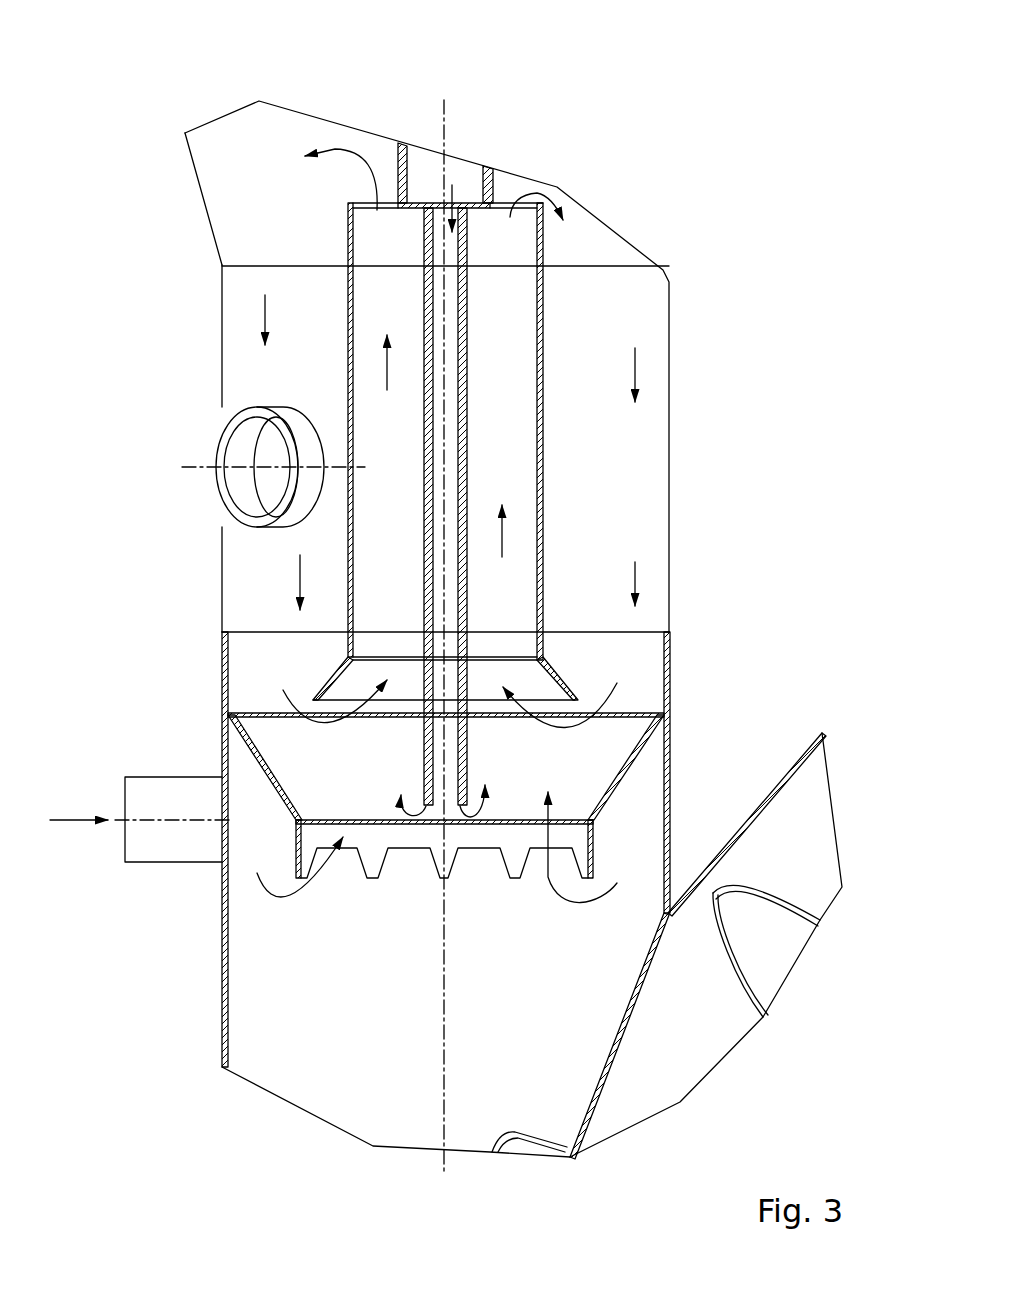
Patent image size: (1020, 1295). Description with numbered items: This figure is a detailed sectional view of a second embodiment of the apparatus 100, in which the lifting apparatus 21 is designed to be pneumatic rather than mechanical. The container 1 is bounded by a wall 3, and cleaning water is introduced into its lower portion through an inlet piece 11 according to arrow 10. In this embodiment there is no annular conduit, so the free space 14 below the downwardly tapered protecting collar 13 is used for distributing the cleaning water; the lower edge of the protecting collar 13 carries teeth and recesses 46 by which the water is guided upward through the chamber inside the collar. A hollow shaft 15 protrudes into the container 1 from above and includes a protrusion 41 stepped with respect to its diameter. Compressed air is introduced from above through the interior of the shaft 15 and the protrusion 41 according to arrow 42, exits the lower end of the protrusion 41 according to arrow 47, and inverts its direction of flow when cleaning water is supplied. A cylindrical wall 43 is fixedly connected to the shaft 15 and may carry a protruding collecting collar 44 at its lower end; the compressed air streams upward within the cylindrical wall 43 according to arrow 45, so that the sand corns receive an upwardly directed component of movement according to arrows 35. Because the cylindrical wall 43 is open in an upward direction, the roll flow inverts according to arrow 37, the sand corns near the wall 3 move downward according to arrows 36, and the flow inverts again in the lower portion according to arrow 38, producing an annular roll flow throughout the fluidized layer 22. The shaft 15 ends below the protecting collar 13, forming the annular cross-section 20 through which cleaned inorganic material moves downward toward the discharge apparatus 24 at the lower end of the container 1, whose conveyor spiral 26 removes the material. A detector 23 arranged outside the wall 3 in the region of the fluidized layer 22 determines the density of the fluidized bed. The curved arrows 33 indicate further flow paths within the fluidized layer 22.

The apparatus 100 is at (118, 120).
The container 1 is at (220, 100).
The wall 3 is at (670, 412).
The arrow 10 is at (73, 820).
The inlet piece 11 is at (162, 842).
The protecting collar 13 is at (250, 745).
The free space 14 is at (265, 790).
The shaft 15 is at (490, 187).
The annular cross-section 20 is at (498, 580).
The lifting apparatus 21 is at (528, 157).
The fluidized layer 22 is at (610, 467).
The detector 23 is at (232, 447).
The discharge apparatus 24 is at (745, 1065).
The conveyor spiral 26 is at (778, 943).
The flow path 33 is at (290, 882).
The arrows 35 is at (453, 432).
The arrows 36 is at (636, 365).
The arrow 37 is at (332, 148).
The arrow 38 is at (295, 705).
The protrusion 41 is at (467, 382).
The arrow 42 is at (455, 228).
The cylindrical wall 43 is at (543, 310).
The collecting collar 44 is at (550, 667).
The arrow 45 is at (387, 372).
The teeth and recesses 46 is at (479, 850).
The arrow 47 is at (462, 815).